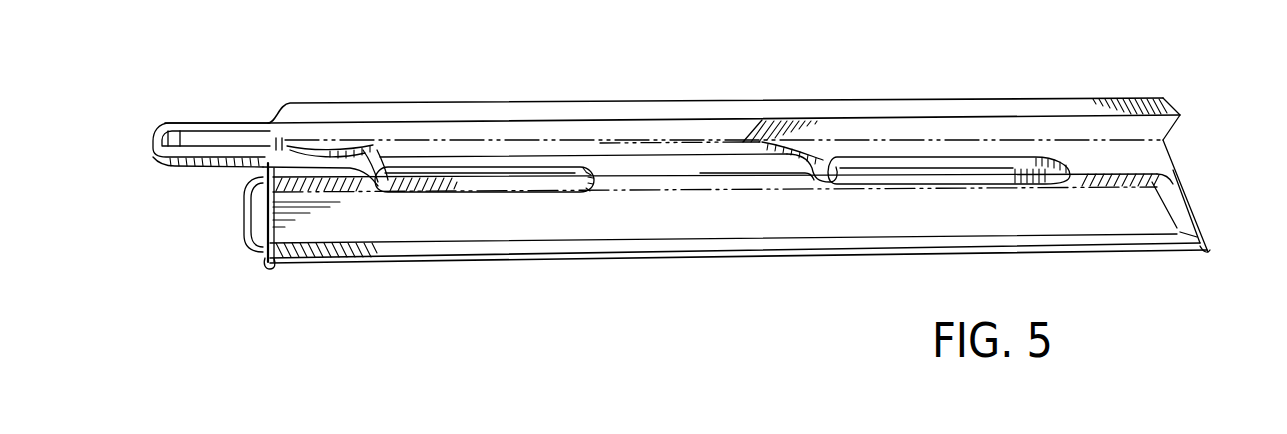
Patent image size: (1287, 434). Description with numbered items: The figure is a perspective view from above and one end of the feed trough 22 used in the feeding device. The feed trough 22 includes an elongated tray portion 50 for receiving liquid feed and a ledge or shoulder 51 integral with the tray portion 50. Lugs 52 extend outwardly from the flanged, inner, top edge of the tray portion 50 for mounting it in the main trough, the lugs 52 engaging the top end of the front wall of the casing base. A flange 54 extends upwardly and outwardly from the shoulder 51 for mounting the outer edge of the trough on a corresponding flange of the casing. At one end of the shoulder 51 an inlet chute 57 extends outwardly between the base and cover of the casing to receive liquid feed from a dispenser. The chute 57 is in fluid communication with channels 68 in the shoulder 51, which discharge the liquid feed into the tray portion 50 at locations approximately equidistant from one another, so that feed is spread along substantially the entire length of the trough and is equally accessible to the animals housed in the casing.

The tray portion 50 is at (733, 232).
The ledge or shoulder 51 is at (637, 162).
The flange 54 is at (754, 110).
The inlet chute 57 is at (224, 122).
The feed trough 22 is at (1177, 170).
The channels 68 is at (575, 196).
The lugs 52 is at (270, 268).